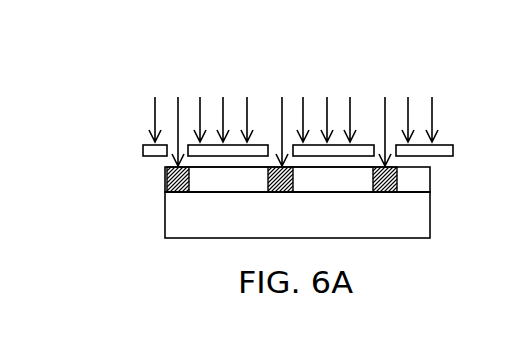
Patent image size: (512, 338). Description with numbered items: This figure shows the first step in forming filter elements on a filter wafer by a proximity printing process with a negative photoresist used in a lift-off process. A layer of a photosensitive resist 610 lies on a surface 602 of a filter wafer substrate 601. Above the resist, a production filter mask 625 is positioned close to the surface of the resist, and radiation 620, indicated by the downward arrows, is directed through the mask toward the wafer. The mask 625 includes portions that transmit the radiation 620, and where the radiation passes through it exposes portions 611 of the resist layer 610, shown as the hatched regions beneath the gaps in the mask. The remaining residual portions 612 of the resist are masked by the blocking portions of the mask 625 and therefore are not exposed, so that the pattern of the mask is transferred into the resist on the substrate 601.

The filter wafer substrate 601 is at (313, 228).
The surface 602 is at (212, 192).
The photosensitive resist layer 610 is at (431, 177).
The exposed portions of resist 611 is at (168, 185).
The residual portions of resist 612 is at (350, 203).
The radiation 620 is at (418, 109).
The production filter mask 625 is at (442, 143).